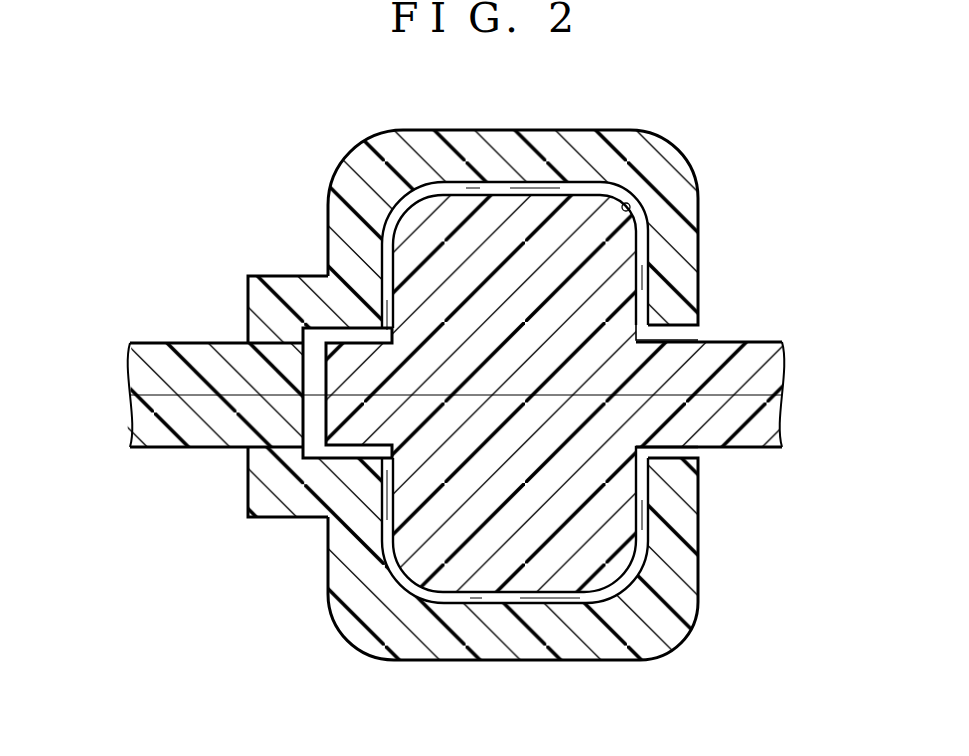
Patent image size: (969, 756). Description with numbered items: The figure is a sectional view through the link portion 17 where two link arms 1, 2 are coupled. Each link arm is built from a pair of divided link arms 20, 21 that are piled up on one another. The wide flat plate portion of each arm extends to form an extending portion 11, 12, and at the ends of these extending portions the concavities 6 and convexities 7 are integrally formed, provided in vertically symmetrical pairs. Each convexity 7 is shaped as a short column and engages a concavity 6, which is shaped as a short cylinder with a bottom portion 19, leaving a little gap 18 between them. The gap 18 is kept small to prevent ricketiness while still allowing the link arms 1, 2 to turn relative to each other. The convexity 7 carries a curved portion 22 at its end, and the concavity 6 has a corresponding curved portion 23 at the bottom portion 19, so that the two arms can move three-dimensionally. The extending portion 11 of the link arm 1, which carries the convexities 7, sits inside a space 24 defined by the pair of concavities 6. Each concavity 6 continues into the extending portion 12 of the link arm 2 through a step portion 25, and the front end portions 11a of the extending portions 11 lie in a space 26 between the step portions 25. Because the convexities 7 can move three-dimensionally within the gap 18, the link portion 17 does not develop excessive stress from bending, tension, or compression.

The link arm 1 is at (480, 379).
The link arm 2 is at (207, 364).
The concavity 6 is at (533, 117).
The convexity 7 is at (570, 398).
The extending portion 11 is at (743, 390).
The front end portion 11a is at (342, 440).
The extending portion 12 is at (222, 348).
The link portion 17 is at (502, 379).
The gap 18 is at (641, 280).
The bottom portion 19 is at (578, 648).
The divided link arm 20 is at (760, 329).
The divided link arm 21 is at (163, 331).
The curved portion 22 is at (603, 197).
The curved portion 23 is at (631, 207).
The space 24 is at (660, 333).
The step portion 25 is at (258, 287).
The space 26 is at (313, 342).